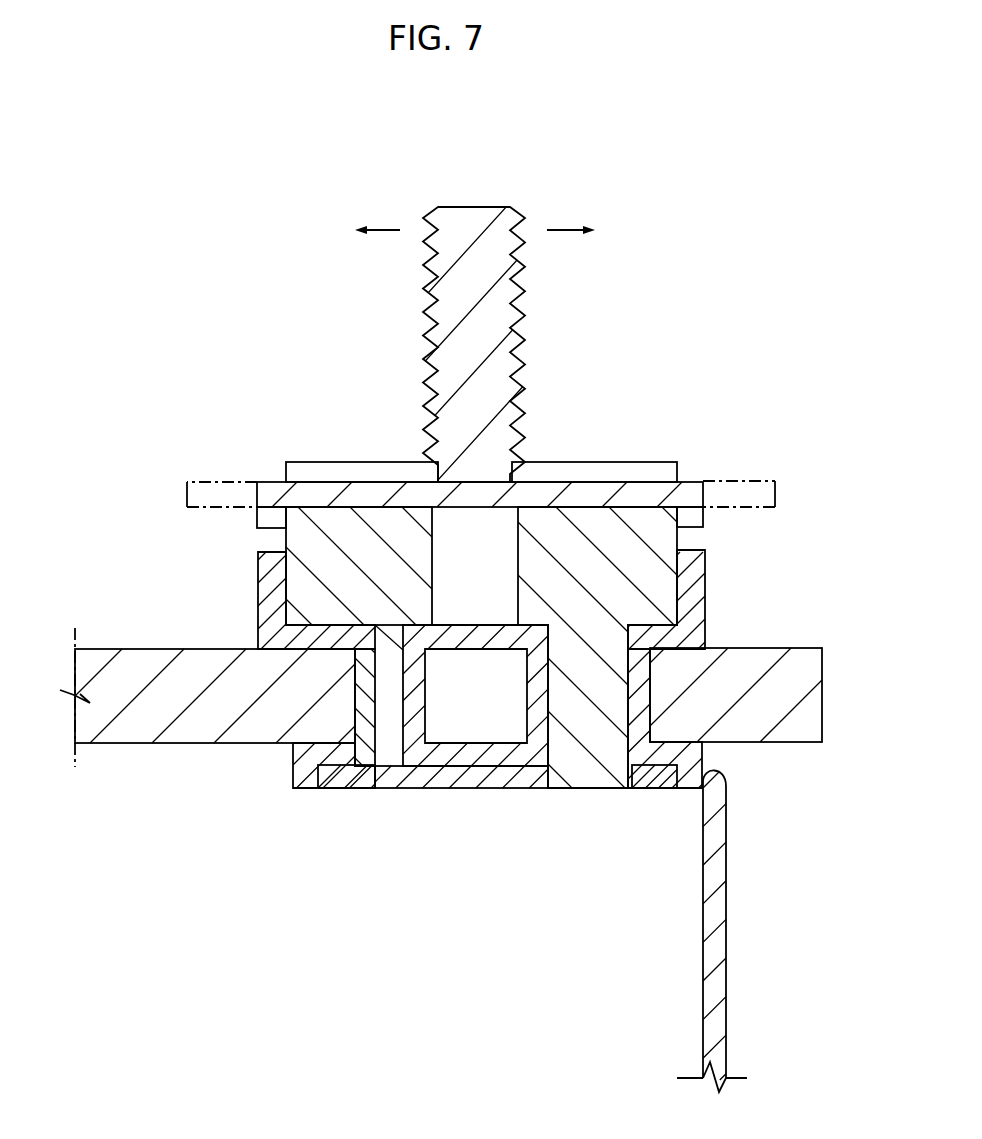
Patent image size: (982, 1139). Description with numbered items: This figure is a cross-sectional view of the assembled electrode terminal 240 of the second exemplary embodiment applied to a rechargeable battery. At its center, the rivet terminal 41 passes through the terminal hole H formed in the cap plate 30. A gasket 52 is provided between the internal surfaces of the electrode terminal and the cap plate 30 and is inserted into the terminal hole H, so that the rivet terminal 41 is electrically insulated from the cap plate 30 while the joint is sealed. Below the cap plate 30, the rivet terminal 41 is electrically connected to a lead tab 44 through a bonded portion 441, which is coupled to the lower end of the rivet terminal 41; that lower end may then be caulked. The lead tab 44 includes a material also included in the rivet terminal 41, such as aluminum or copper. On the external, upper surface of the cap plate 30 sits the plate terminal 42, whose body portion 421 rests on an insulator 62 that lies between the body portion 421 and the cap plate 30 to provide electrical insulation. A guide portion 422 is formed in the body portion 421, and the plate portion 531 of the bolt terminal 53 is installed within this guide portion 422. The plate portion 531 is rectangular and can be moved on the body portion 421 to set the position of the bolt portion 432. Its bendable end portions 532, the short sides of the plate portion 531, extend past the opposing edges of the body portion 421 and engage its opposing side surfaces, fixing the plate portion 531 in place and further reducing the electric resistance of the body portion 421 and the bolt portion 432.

The electrode terminal 240 is at (618, 264).
The bolt terminal 53 is at (330, 262).
The bolt portion 432 is at (437, 272).
The plate portion 531 is at (377, 490).
The plate terminal 42 is at (207, 358).
The guide portion 422 is at (323, 472).
The body portion 421 is at (306, 535).
The bendable end portions 532 is at (257, 520).
The rivet terminal 41 is at (602, 775).
The insulator 62 is at (260, 587).
The cap plate 30 is at (140, 662).
The terminal hole H is at (650, 688).
The gasket 52 is at (702, 757).
The bonded portion 441 is at (445, 782).
The lead tab 44 is at (705, 997).